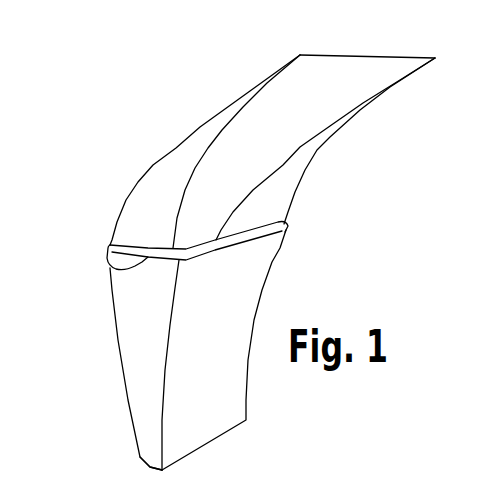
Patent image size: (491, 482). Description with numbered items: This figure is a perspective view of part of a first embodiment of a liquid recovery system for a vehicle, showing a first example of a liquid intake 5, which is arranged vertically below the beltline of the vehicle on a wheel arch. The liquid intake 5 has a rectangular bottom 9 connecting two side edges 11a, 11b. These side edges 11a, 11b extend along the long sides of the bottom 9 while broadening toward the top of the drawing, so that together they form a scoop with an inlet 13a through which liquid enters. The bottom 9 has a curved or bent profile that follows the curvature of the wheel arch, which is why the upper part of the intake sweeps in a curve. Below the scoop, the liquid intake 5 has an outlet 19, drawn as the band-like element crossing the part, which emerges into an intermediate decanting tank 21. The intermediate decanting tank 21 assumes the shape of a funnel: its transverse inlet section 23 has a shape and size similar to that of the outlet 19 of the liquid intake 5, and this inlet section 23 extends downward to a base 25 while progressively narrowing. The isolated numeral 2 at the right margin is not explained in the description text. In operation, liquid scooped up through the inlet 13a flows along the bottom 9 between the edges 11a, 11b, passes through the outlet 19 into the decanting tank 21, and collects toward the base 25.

The turbine 2 is at (482, 297).
The liquid intake 5 is at (134, 154).
The rectangular bottom 9 is at (280, 99).
The side edge 11a is at (190, 157).
The side edge 11b is at (315, 143).
The inlet 13a is at (350, 92).
The outlet 19 is at (230, 238).
The intermediate decanting tank 21 is at (152, 323).
The transverse inlet section 23 is at (110, 258).
The base 25 is at (150, 467).